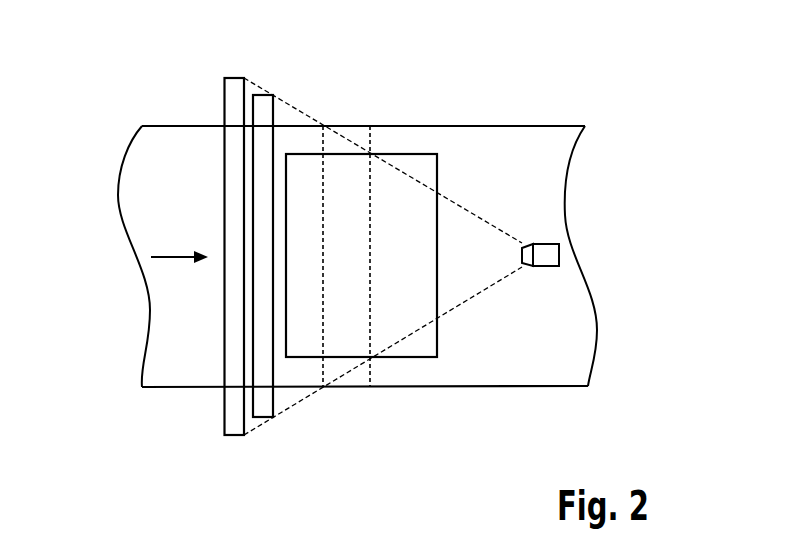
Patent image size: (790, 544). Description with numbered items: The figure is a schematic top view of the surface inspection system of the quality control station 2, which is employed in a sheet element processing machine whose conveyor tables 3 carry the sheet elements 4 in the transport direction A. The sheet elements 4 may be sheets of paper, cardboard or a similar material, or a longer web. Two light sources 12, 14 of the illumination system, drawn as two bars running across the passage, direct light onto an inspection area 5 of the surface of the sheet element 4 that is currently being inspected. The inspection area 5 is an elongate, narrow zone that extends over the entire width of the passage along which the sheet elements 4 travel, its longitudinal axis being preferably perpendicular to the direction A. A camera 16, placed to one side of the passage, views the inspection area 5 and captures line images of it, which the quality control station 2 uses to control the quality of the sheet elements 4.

The quality control station 2 is at (375, 88).
The conveyor tables 3 is at (556, 332).
The sheet elements 4 is at (418, 154).
The inspection area 5 is at (372, 390).
The light source 12 is at (233, 86).
The light source 14 is at (263, 100).
The camera 16 is at (559, 255).
The direction of transport A is at (166, 255).